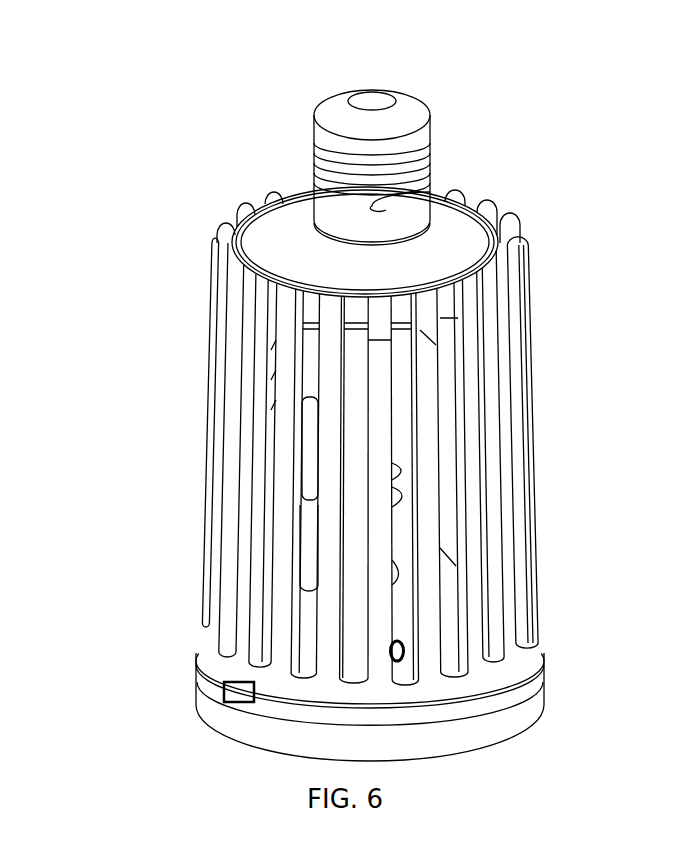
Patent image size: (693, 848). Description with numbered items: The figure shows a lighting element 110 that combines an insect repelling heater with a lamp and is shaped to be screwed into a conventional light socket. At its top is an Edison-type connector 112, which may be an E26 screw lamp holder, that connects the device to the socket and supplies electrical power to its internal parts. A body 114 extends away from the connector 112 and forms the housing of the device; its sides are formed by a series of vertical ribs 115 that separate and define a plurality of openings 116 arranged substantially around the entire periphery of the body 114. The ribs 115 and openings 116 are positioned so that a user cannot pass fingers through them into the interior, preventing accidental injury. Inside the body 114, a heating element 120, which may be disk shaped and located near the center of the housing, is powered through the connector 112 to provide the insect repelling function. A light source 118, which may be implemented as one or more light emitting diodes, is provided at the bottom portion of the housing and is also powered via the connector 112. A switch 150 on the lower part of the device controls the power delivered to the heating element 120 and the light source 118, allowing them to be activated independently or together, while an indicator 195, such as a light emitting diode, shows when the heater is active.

The lighting element 110 is at (225, 180).
The Edison-type connector 112 is at (407, 143).
The body 114 is at (503, 257).
The vertical ribs 115 is at (287, 460).
The openings 116 is at (353, 610).
The heating element 120 is at (398, 483).
The indicator 195 is at (405, 645).
The switch 150 is at (224, 682).
The light source 118 is at (498, 723).